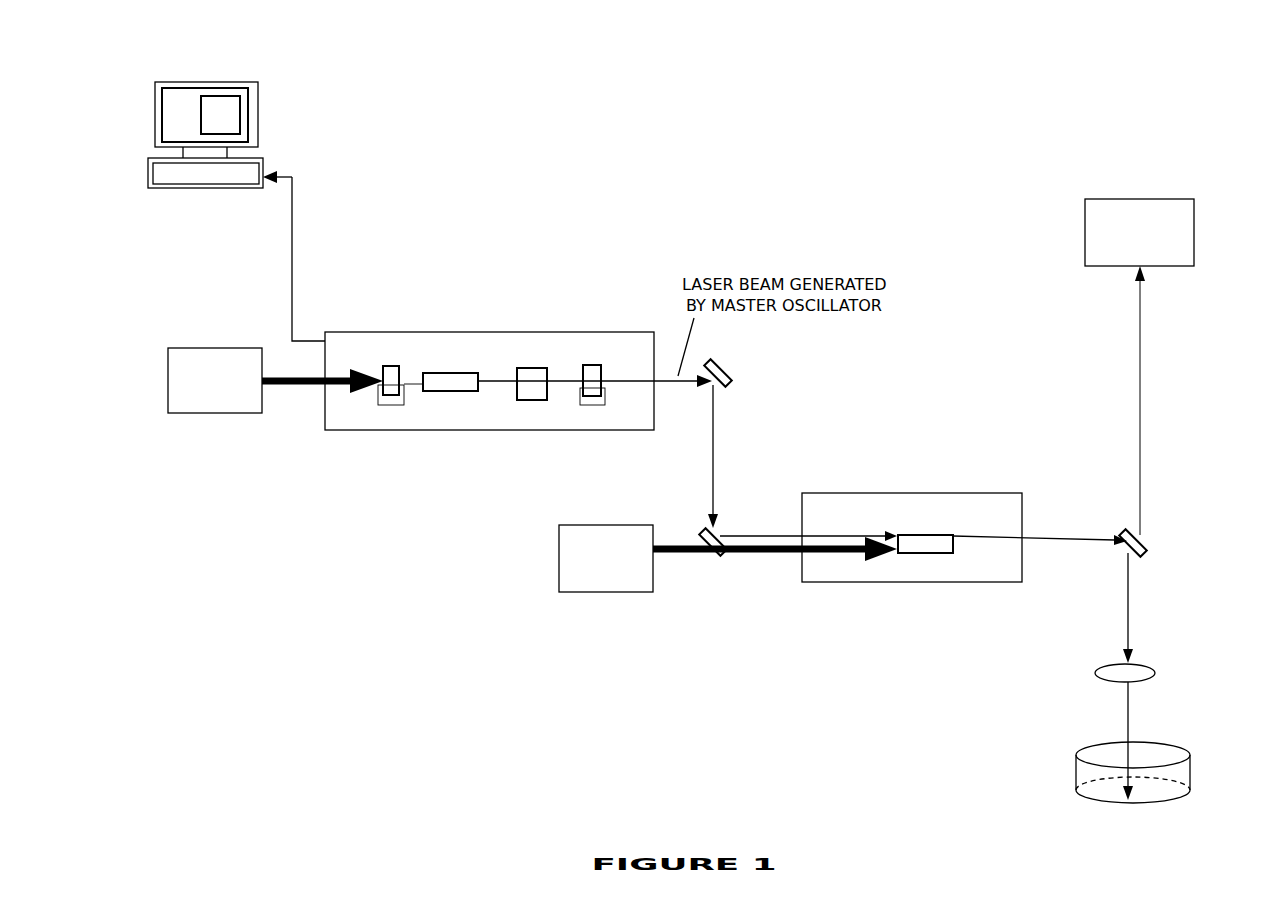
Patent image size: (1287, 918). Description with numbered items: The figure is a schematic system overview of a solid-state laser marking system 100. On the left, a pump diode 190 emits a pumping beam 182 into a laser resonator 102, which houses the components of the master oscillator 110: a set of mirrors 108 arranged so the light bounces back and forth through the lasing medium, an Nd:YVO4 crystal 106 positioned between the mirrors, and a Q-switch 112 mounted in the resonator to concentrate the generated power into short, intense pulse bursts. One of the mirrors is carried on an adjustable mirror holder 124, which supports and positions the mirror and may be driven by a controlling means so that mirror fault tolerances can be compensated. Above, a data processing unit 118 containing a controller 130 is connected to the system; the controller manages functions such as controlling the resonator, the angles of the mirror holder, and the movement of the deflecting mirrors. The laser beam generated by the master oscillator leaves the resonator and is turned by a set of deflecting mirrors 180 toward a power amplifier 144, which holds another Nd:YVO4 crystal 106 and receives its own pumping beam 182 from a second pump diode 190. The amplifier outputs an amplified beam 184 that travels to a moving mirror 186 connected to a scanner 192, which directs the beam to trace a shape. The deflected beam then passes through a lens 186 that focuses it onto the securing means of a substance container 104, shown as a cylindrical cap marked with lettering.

The solid-state laser marking system 100 is at (1012, 851).
The laser resonator 102 is at (498, 332).
The securing means of a substance container 104 is at (1082, 781).
The Nd:YVO4 crystal 106 is at (925, 535).
The set of mirrors 108 is at (391, 395).
The master oscillator 110 is at (537, 332).
The Q-switch 112 is at (528, 400).
The data processing unit 118 is at (198, 82).
The adjustable mirror holder 124 is at (400, 405).
The controller 130 is at (235, 116).
The power amplifier 144 is at (985, 493).
The deflecting mirror 180 is at (701, 597).
The pumping beam 182 is at (303, 385).
The amplified beam 184 is at (1093, 543).
The moving mirror and lens 186 is at (1153, 673).
The pump diode 190 is at (410, 470).
The scanner 192 is at (1139, 367).